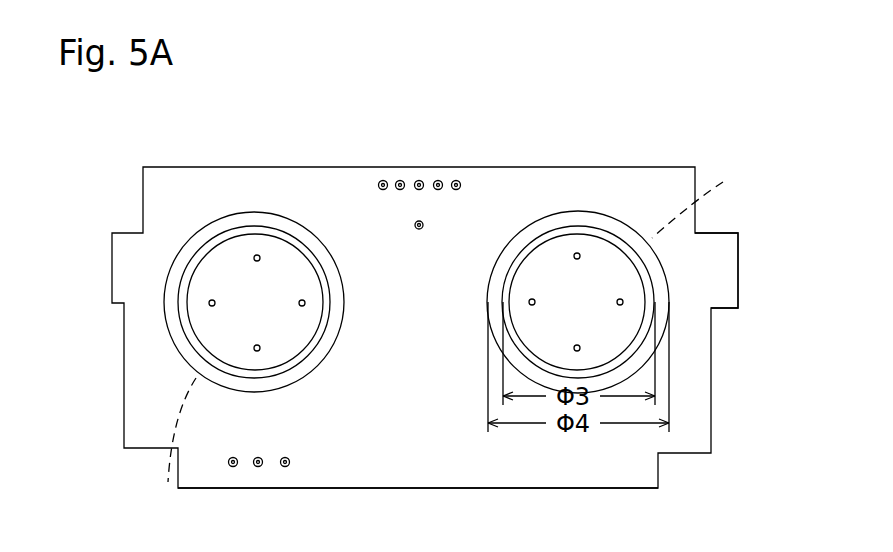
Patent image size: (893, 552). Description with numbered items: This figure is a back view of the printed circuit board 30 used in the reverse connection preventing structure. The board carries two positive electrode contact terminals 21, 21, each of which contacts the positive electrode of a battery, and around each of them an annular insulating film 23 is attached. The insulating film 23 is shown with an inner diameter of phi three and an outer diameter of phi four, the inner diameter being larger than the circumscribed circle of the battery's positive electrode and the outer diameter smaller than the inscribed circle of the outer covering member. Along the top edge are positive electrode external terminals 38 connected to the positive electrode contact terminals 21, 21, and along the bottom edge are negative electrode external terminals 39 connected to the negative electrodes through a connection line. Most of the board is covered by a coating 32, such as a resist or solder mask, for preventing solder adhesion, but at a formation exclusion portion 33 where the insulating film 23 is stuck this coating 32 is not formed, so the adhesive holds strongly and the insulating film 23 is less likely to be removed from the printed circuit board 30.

The positive electrode contact terminal 21 is at (228, 253).
The annular insulating film 23 is at (292, 228).
The printed circuit board 30 is at (342, 167).
The coating for preventing solder adhesion 32 is at (676, 268).
The formation exclusion portion 33 is at (166, 482).
The positive electrode external terminal 38 is at (428, 171).
The negative electrode external terminal 39 is at (264, 473).